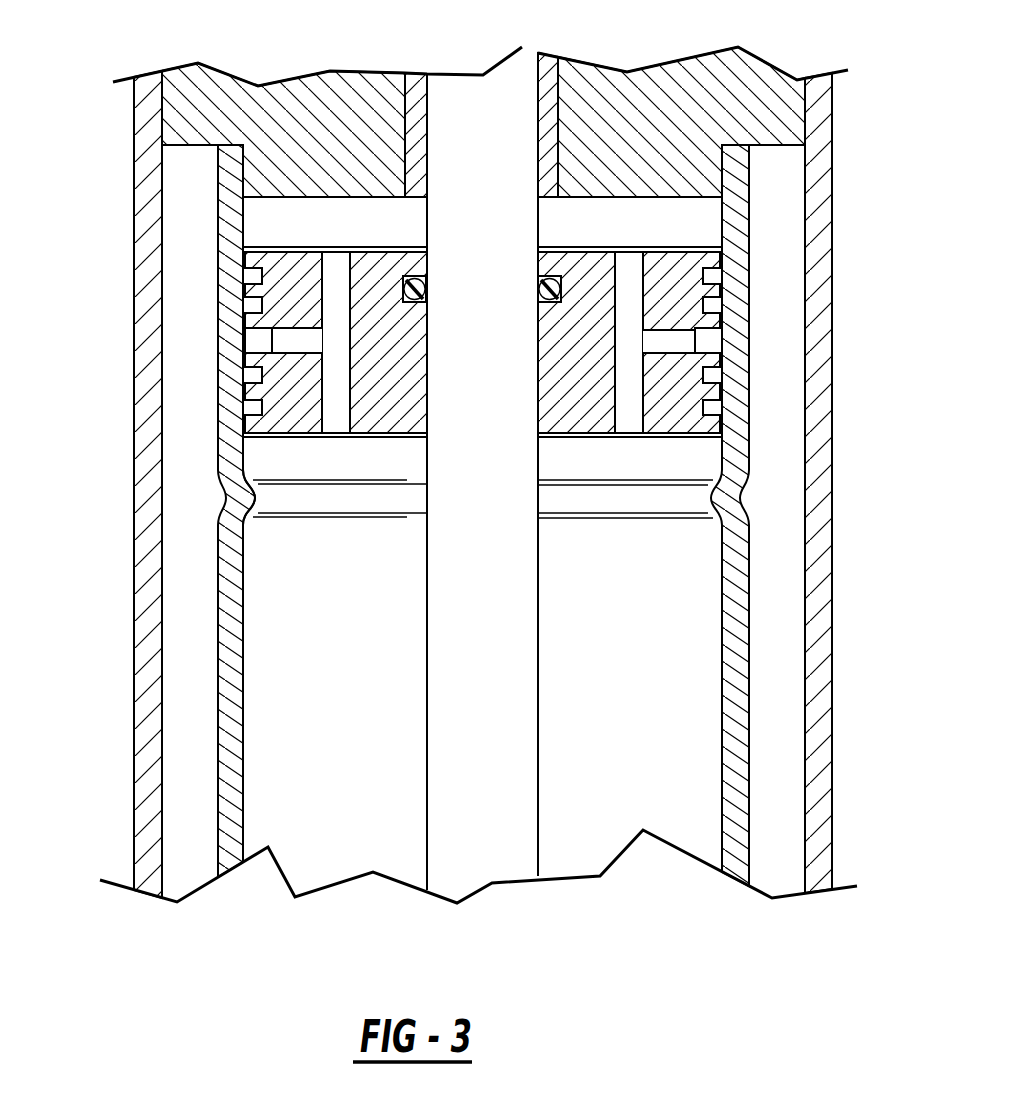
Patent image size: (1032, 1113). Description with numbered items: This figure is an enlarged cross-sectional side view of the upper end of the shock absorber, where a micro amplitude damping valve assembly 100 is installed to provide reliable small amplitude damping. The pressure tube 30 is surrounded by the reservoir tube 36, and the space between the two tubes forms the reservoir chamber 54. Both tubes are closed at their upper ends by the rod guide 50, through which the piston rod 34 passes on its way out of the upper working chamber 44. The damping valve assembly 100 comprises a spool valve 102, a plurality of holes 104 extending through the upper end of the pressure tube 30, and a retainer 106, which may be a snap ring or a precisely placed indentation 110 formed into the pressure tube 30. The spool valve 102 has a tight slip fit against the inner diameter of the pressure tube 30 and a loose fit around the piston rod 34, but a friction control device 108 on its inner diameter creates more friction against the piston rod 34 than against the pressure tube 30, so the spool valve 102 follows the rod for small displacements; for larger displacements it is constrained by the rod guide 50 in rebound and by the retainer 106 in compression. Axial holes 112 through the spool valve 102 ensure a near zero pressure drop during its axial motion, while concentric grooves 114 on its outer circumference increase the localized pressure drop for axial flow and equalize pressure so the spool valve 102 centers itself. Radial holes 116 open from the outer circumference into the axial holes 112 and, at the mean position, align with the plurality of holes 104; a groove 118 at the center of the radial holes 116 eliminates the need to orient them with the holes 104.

The pressure tube 30 is at (750, 713).
The piston rod 34 is at (470, 725).
The reservoir tube 36 is at (822, 593).
The upper working chamber 44 is at (597, 707).
The rod guide 50 is at (750, 108).
The reservoir chamber 54 is at (772, 807).
The micro amplitude damping valve assembly 100 is at (288, 226).
The spool valve 102 is at (282, 387).
The plurality of holes 104 is at (225, 340).
The retainer 106 is at (710, 498).
The friction control device 108 is at (560, 283).
The indentation 110 is at (227, 497).
The axial holes 112 is at (628, 302).
The concentric grooves 114 is at (720, 409).
The radial holes 116 is at (292, 340).
The groove 118 is at (706, 339).